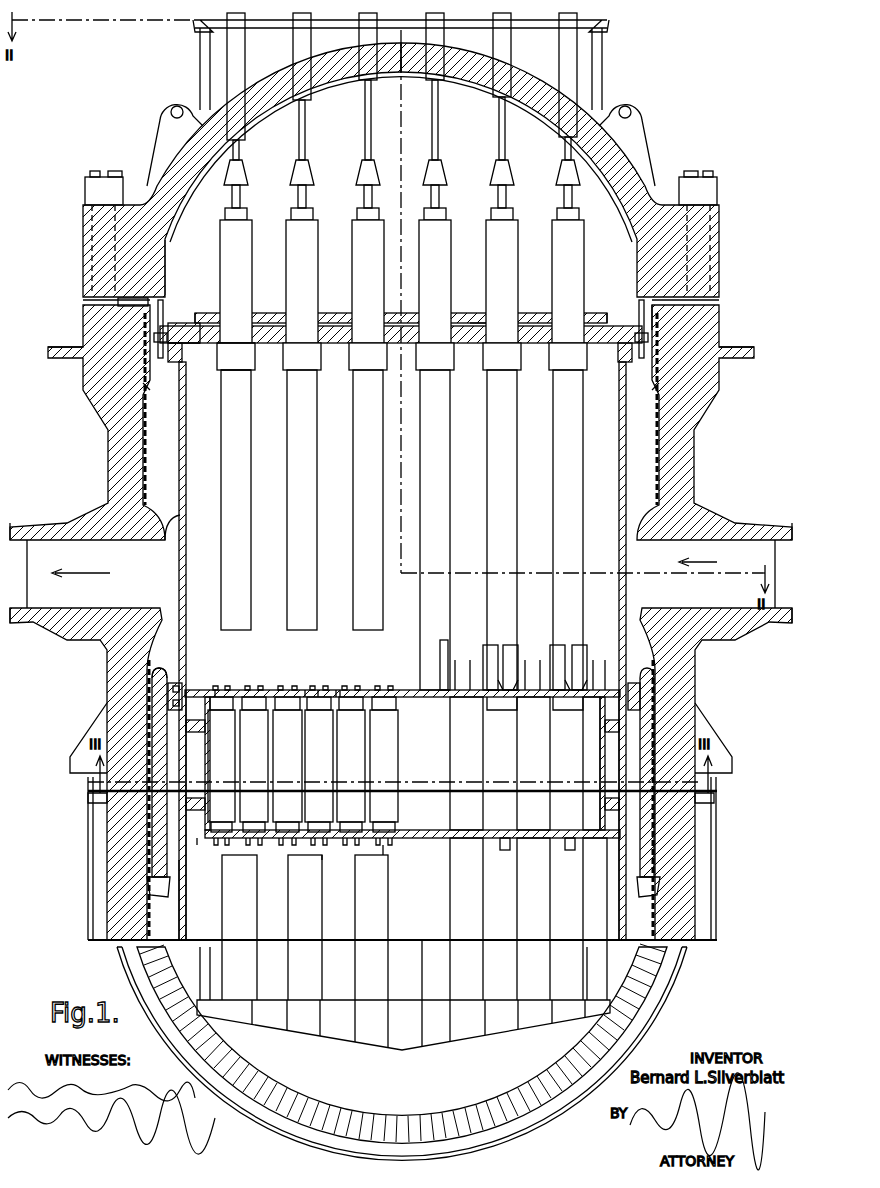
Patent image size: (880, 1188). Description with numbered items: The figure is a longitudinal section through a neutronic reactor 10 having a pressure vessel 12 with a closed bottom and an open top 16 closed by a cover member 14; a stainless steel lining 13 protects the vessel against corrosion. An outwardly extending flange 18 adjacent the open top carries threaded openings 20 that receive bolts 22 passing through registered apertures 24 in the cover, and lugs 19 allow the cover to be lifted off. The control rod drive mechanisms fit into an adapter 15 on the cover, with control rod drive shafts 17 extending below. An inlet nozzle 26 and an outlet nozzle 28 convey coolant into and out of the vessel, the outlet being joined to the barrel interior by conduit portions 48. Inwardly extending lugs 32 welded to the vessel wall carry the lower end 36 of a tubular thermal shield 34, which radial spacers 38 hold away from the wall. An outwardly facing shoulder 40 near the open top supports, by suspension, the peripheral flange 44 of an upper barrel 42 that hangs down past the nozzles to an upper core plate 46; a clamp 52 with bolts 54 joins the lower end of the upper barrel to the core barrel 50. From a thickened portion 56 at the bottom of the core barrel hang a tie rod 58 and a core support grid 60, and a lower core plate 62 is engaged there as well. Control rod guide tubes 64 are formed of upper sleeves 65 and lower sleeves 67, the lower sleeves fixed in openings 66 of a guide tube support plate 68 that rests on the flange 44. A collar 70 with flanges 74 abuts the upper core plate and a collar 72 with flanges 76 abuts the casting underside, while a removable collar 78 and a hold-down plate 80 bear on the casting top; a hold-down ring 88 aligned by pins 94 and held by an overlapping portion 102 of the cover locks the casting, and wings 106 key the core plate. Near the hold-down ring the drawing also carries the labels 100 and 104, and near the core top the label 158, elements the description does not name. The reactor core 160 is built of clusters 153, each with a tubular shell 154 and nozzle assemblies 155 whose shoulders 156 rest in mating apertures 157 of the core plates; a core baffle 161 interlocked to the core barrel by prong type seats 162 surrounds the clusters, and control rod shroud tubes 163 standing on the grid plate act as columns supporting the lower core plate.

The neutronic reactor 10 is at (58, 436).
The pressure vessel 12 is at (108, 677).
The stainless steel lining 13 is at (148, 483).
The cover member 14 is at (155, 188).
The adapter 15 is at (256, 42).
The open top 16 is at (680, 304).
The control rod drive shafts 17 is at (243, 202).
The outwardly extending flange 18 is at (92, 378).
The lugs 19 is at (164, 115).
The threaded openings 20 is at (85, 328).
The bolts 22 is at (97, 174).
The apertures 24 is at (88, 270).
The inlet nozzle 26 is at (790, 524).
The outlet nozzle 28 is at (14, 524).
The lugs 32 is at (185, 905).
The thermal shield 34 is at (658, 686).
The lower end of thermal shield 36 is at (165, 890).
The radial spacers 38 is at (150, 727).
The shoulder 40 is at (147, 388).
The upper barrel 42 is at (181, 453).
The peripheral flange 44 is at (181, 383).
The upper core plate 46 is at (420, 690).
The conduit portions 48 is at (185, 542).
The core barrel 50 is at (197, 740).
The clamp 52 is at (180, 690).
The bolts 54 is at (170, 672).
The thickened portion 56 is at (196, 812).
The tie rod 58 is at (188, 898).
The core support grid 60 is at (412, 1050).
The lower core plate 62 is at (484, 828).
The control rod guide tubes 64 is at (360, 450).
The upper sleeves 65 is at (311, 250).
The openings 66 is at (360, 315).
The lower sleeves 67 is at (227, 481).
The guide tube support plate 68 is at (594, 316).
The collar 70 is at (508, 662).
The collar 72 is at (257, 375).
The flanges 74 is at (513, 675).
The flanges 76 is at (256, 355).
The removable collar 78 is at (240, 317).
The hold-down plate 80 is at (481, 315).
The hold-down ring 88 is at (183, 322).
The pins 94 is at (165, 302).
The head flange inner surface 100 is at (163, 283).
The overlapping portion 102 is at (118, 302).
The flange bolt 104 is at (175, 346).
The wings 106 is at (186, 662).
The clusters 153 is at (252, 695).
The tubular shell 154 is at (404, 751).
The nozzle assembly 155 is at (340, 690).
The shoulder 156 is at (336, 690).
The mating apertures 157 is at (318, 690).
The fuel assembly top nozzle 158 is at (305, 690).
The reactor core 160 is at (292, 866).
The core baffle 161 is at (200, 765).
The prong type seats 162 is at (215, 690).
The control rod shroud tubes 163 is at (250, 980).